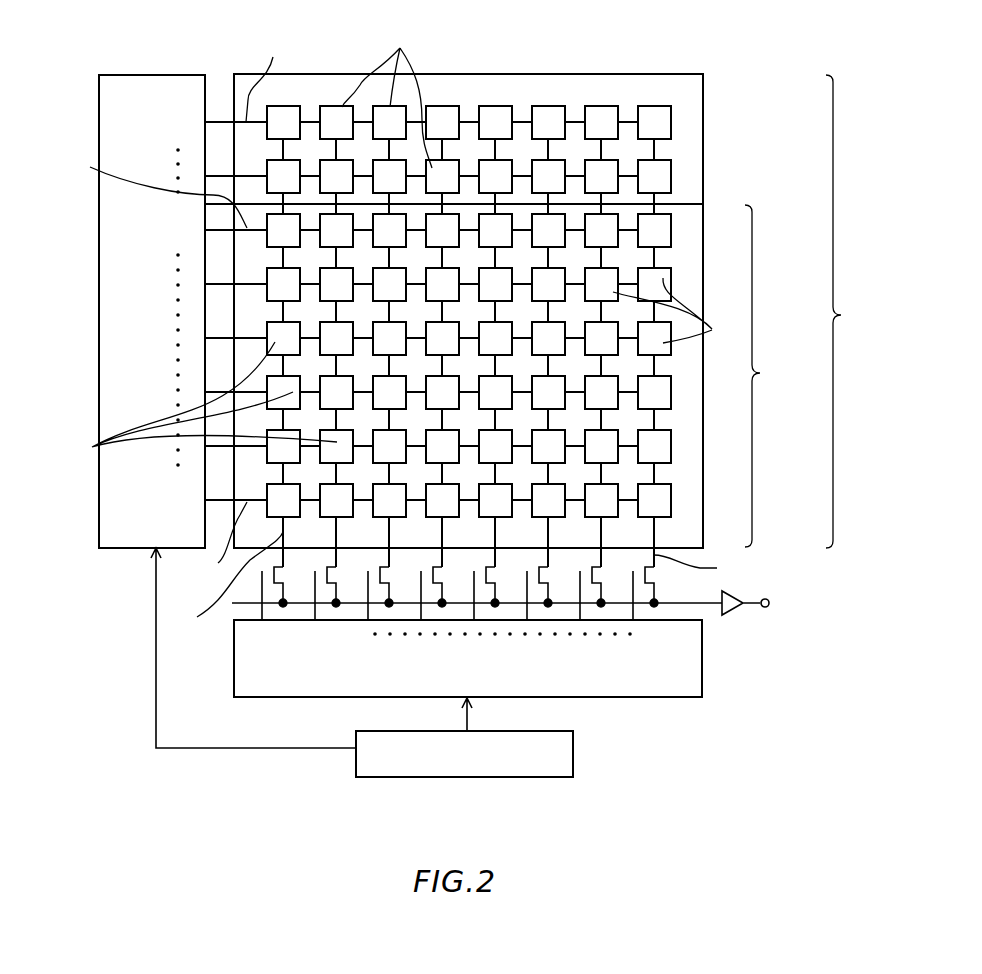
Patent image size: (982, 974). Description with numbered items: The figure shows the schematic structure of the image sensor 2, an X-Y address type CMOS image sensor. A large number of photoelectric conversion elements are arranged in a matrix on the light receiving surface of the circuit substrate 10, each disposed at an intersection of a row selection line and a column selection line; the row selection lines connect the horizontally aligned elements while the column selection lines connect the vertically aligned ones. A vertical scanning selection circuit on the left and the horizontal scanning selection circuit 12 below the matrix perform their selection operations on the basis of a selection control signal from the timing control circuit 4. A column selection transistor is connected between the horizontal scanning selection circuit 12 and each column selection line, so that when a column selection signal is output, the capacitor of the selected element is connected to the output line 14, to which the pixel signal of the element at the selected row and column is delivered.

The image sensor 2 is at (515, 41).
The circuit substrate 10 is at (593, 74).
The horizontal scanning selection circuit 12 is at (616, 684).
The output line 14 is at (705, 606).
The timing control circuit 4 is at (574, 745).